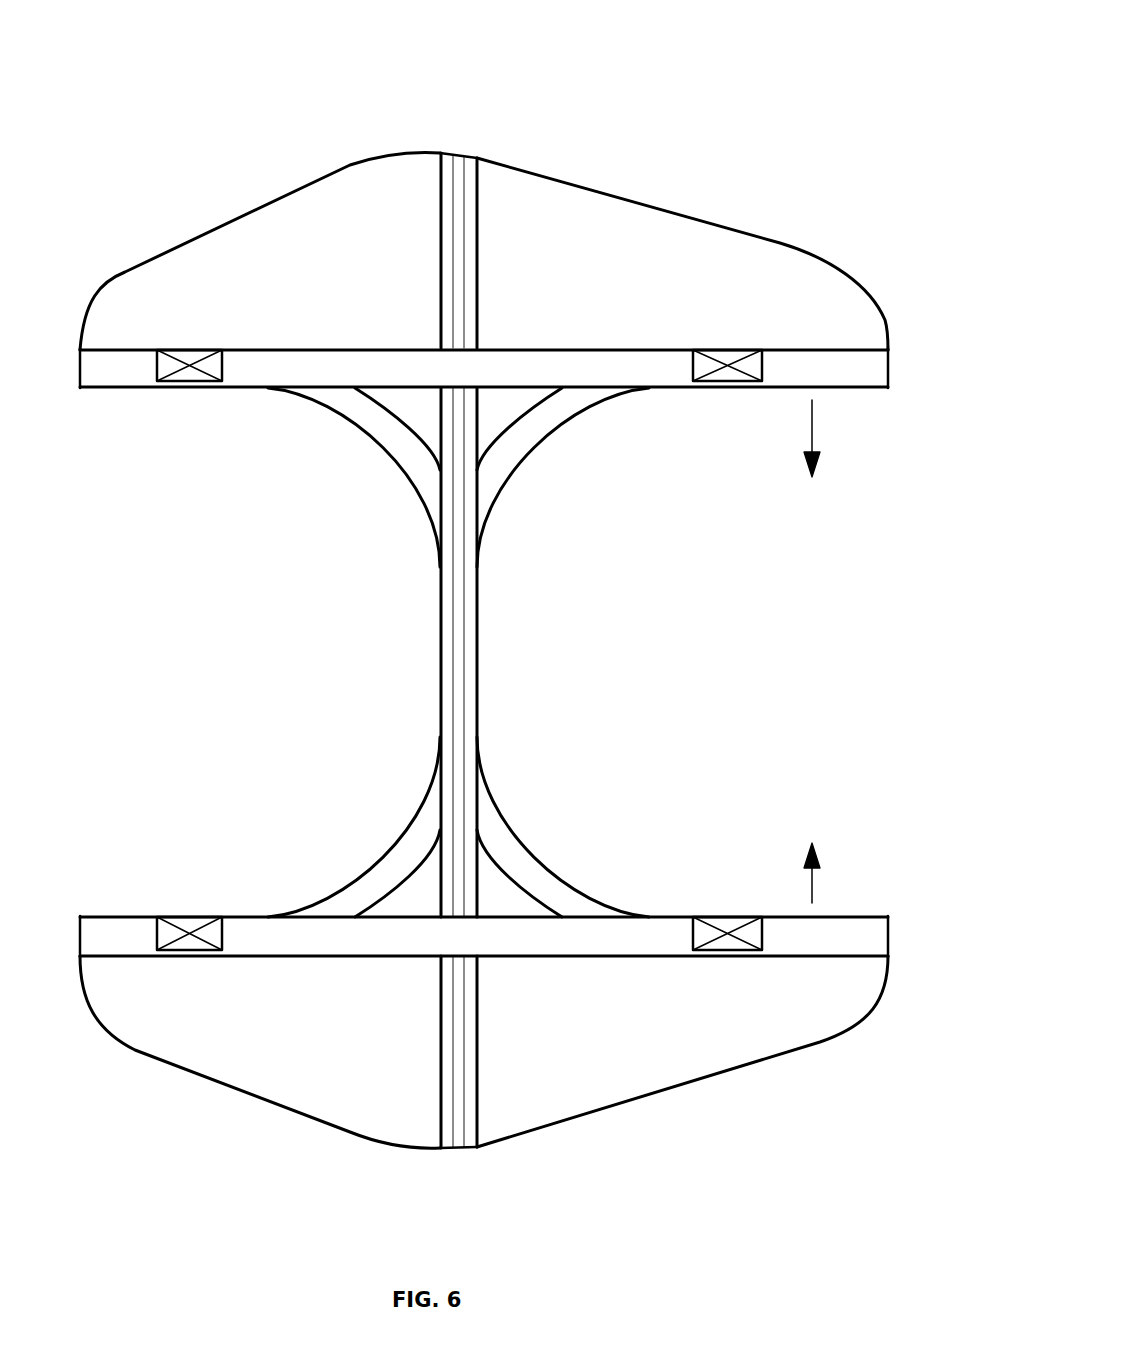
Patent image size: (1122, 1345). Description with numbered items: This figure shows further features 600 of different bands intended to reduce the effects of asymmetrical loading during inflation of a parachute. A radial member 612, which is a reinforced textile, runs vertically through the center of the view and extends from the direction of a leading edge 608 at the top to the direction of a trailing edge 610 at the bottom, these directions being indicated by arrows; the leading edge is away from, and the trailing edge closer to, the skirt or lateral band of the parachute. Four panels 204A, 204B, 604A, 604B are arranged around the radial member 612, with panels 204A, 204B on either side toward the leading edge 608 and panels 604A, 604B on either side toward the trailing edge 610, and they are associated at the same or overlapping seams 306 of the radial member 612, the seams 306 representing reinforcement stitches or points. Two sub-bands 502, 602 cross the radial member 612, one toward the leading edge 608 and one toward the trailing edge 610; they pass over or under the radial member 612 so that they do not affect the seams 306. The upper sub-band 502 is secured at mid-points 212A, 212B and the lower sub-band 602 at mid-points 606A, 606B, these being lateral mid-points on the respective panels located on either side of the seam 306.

The features 600 is at (489, 580).
The seams 306 is at (432, 203).
The panel 204A is at (382, 258).
The panel 204B is at (559, 260).
The sub-band 502 is at (478, 378).
The mid-point 212A is at (203, 393).
The mid-point 212B is at (718, 393).
The leading edge 608 is at (827, 408).
The trailing edge 610 is at (838, 882).
The radial member 612 is at (432, 632).
The mid-point 606A is at (208, 888).
The mid-point 606B is at (725, 900).
The sub-band 602 is at (478, 948).
The panel 604A is at (382, 1048).
The panel 604B is at (559, 1050).